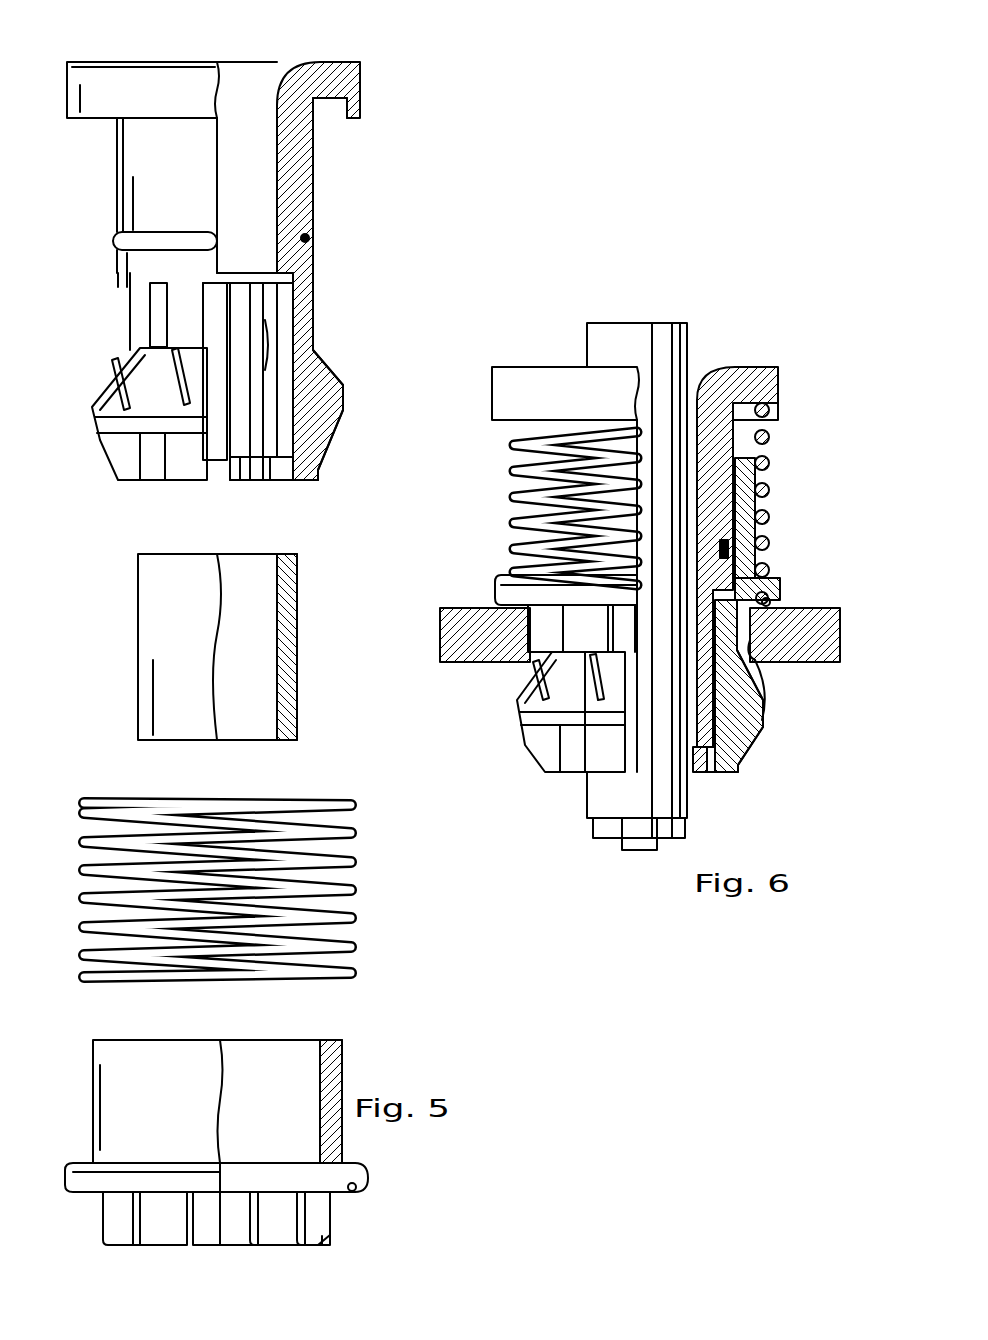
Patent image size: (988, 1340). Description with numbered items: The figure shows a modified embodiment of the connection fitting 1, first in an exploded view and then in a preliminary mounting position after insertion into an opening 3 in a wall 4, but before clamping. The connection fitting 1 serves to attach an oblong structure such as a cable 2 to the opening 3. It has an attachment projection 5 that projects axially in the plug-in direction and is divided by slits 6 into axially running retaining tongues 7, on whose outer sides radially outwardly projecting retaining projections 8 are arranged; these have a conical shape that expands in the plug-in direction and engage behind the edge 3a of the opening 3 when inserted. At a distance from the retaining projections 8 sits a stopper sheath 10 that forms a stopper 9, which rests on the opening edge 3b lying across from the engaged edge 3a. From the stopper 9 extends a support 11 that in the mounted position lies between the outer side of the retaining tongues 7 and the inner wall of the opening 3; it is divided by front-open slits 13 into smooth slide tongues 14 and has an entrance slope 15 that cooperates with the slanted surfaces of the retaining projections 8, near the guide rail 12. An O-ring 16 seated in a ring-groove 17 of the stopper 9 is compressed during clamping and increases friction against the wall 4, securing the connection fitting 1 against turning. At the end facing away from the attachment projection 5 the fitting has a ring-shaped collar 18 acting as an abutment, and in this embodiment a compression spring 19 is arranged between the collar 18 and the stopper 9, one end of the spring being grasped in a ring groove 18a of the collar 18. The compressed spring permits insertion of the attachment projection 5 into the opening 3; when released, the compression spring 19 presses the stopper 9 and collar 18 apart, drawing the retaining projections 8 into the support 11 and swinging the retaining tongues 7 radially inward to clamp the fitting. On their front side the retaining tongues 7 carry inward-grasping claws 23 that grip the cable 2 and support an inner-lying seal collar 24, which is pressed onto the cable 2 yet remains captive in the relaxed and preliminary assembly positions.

In FIG. 5, the connection fitting 1 is at (72, 205).
In FIG. 6, the connection fitting 1 is at (492, 722).
In FIG. 6, the cable 2 is at (683, 350).
In FIG. 6, the opening 3 is at (500, 597).
In FIG. 6, the edge 3a is at (762, 655).
In FIG. 6, the opening edge 3b is at (772, 610).
In FIG. 6, the wall 4 is at (462, 660).
In FIG. 5, the attachment projection 5 is at (330, 465).
In FIG. 6, the attachment projection 5 is at (750, 752).
In FIG. 5, the slits 6 is at (222, 465).
In FIG. 6, the slits 6 is at (577, 770).
In FIG. 5, the retaining tongues 7 is at (130, 482).
In FIG. 6, the retaining tongues 7 is at (548, 772).
In FIG. 5, the retaining projections 8 is at (100, 425).
In FIG. 6, the retaining projections 8 is at (530, 722).
In FIG. 5, the stopper 9 is at (90, 1185).
In FIG. 6, the stopper 9 is at (745, 595).
In FIG. 5, the stopper sheath 10 is at (105, 1098).
In FIG. 6, the stopper sheath 10 is at (745, 542).
In FIG. 5, the support 11 is at (97, 1232).
In FIG. 5, the guide rail 12 is at (177, 370).
In FIG. 6, the guide rail 12 is at (597, 702).
In FIG. 5, the slits 13 is at (300, 1245).
In FIG. 6, the slits 13 is at (605, 603).
In FIG. 5, the slide tongues 14 is at (162, 1245).
In FIG. 6, the slide tongues 14 is at (630, 642).
In FIG. 5, the entrance slope 15 is at (328, 1245).
In FIG. 5, the O-ring 16 is at (358, 1190).
In FIG. 5, the ring-groove 17 is at (362, 1170).
In FIG. 5, the collar 18 is at (330, 80).
In FIG. 6, the collar 18 is at (520, 402).
In FIG. 5, the ring groove 18a is at (323, 106).
In FIG. 6, the ring groove 18a is at (758, 368).
In FIG. 5, the compression spring 19 is at (352, 862).
In FIG. 6, the compression spring 19 is at (770, 462).
In FIG. 5, the claws 23 is at (278, 479).
In FIG. 6, the claws 23 is at (708, 772).
In FIG. 5, the seal collar 24 is at (290, 665).
In FIG. 6, the seal collar 24 is at (740, 745).